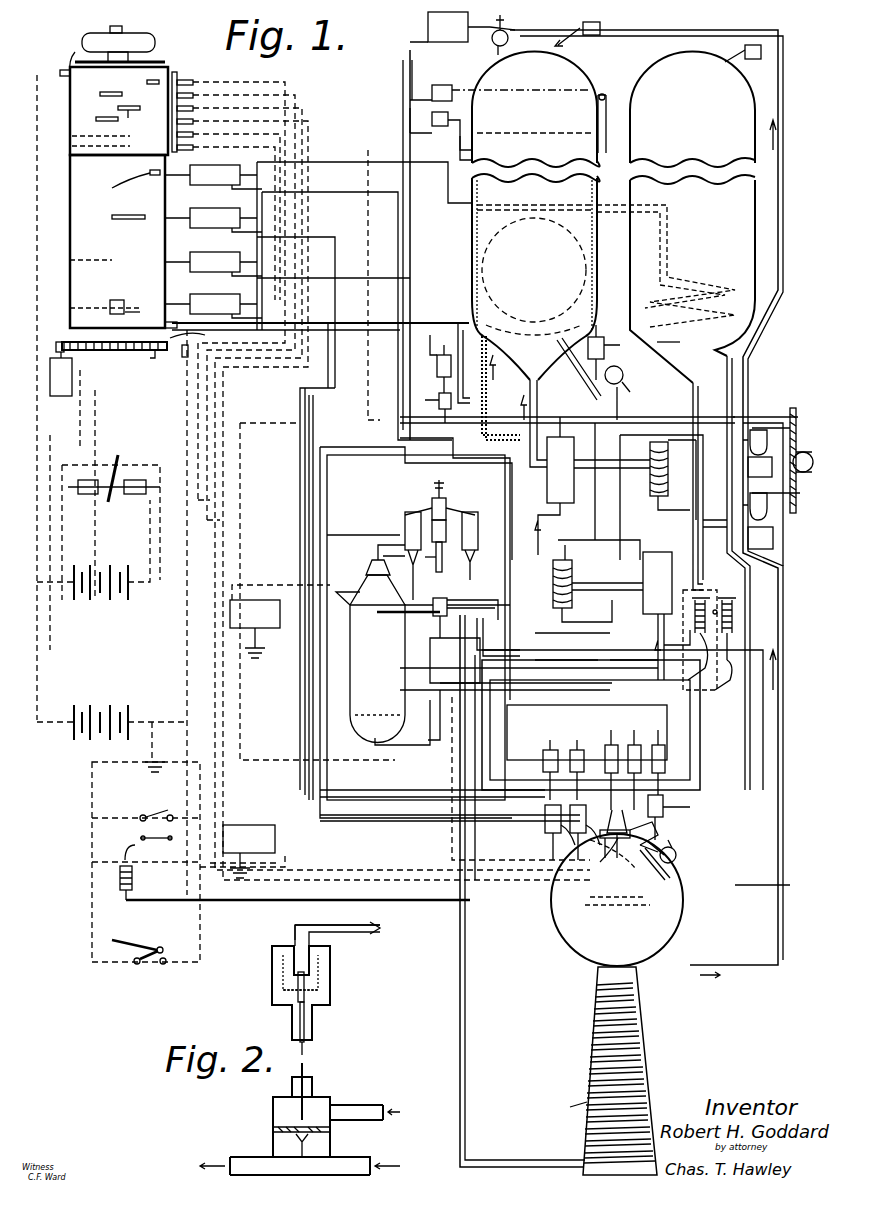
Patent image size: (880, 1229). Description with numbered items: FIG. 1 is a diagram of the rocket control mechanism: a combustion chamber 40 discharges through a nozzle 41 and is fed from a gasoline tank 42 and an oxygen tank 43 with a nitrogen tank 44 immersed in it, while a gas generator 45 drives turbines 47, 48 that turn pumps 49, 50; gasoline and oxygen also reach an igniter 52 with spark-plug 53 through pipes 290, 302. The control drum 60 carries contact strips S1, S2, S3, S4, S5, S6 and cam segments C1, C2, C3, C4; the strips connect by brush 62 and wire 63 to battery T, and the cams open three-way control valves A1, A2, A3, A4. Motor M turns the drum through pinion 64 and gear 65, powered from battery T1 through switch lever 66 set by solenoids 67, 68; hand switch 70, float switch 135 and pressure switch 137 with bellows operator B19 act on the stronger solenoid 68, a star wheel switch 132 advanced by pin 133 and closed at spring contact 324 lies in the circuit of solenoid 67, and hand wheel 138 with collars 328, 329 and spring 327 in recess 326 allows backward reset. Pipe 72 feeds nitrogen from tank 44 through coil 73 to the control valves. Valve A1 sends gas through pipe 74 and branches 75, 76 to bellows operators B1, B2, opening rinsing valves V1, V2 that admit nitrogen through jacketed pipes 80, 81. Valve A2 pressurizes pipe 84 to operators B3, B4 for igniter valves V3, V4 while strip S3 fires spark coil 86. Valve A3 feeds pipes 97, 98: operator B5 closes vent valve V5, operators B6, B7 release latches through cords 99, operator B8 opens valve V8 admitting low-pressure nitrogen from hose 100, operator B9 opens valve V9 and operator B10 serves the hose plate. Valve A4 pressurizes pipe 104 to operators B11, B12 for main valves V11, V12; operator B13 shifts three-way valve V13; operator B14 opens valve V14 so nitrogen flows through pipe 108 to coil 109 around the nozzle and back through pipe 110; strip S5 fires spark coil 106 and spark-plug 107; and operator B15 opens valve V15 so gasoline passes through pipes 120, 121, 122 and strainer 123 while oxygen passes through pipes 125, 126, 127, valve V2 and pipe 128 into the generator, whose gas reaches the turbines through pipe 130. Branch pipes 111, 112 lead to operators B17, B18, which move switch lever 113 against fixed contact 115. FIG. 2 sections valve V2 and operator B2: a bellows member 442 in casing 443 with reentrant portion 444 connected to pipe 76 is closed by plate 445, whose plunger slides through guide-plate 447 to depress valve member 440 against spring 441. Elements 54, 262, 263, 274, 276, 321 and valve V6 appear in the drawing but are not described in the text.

In FIG. 1, the combustion chamber 40 is at (672, 937).
In FIG. 1, the nozzle 41 is at (640, 1040).
In FIG. 1, the gasoline tank 42 is at (692, 421).
In FIG. 1, the oxygen tank 43 is at (521, 216).
In FIG. 1, the nitrogen tank 44 is at (534, 276).
In FIG. 1, the gas generator 45 is at (355, 648).
In FIG. 1, the turbine 47 is at (598, 591).
In FIG. 1, the turbine 48 is at (638, 507).
In FIG. 1, the gasoline pump 49 is at (650, 616).
In FIG. 1, the oxygen pump 50 is at (567, 496).
In FIG. 1, the igniter 52 is at (608, 838).
In FIG. 1, the spark-plug 53 is at (614, 850).
In FIG. 1, the spark plug igniter 54 is at (676, 855).
In FIG. 1, the drum 60 is at (70, 275).
In FIG. 1, the brush 62 is at (58, 68).
In FIG. 1, the wire 63 is at (26, 397).
In FIG. 1, the pinion 64 is at (53, 334).
In FIG. 1, the gear 65 is at (141, 361).
In FIG. 1, the switch lever 66 is at (120, 464).
In FIG. 1, the solenoid 67 is at (114, 479).
In FIG. 1, the solenoid 68 is at (146, 480).
In FIG. 1, the hand switch 70 is at (146, 805).
In FIG. 1, the pipe 72 is at (468, 290).
In FIG. 1, the coil 73 is at (666, 266).
In FIG. 1, the pipe 74 is at (357, 316).
In FIG. 1, the branch pipe 75 is at (416, 627).
In FIG. 1, the branch pipe 76 is at (403, 689).
In FIG. 1, the jacketed pipe 80 is at (489, 593).
In FIG. 1, the branch jacketed pipe 81 is at (472, 605).
In FIG. 2, the branch jacketed pipe 81 is at (365, 1103).
In FIG. 1, the pipe 84 is at (360, 828).
In FIG. 1, the spark coil 86 is at (242, 851).
In FIG. 1, the pipe 97 is at (420, 245).
In FIG. 1, the pipe 98 is at (496, 350).
In FIG. 1, the cords 99 is at (533, 123).
In FIG. 1, the hose 100 is at (661, 493).
In FIG. 1, the pipe 104 is at (290, 470).
In FIG. 1, the spark coil 106 is at (280, 621).
In FIG. 1, the spark-plug 107 is at (360, 597).
In FIG. 1, the pipe 108 is at (490, 799).
In FIG. 1, the coil 109 is at (567, 1103).
In FIG. 1, the pipe 110 is at (762, 885).
In FIG. 1, the branch pipe 111 is at (684, 646).
In FIG. 1, the branch pipe 112 is at (529, 667).
In FIG. 1, the switch lever 113 is at (728, 619).
In FIG. 1, the fixed contact 115 is at (700, 634).
In FIG. 1, the pipe 120 is at (694, 525).
In FIG. 1, the pipe 121 is at (524, 661).
In FIG. 1, the pipe 122 is at (370, 550).
In FIG. 1, the strainer 123 is at (362, 567).
In FIG. 1, the pipe 125 is at (547, 421).
In FIG. 1, the pipe 126 is at (434, 573).
In FIG. 1, the pipe 127 is at (498, 637).
In FIG. 2, the pipe 127 is at (365, 1155).
In FIG. 1, the pipe 128 is at (406, 626).
In FIG. 2, the pipe 128 is at (285, 1155).
In FIG. 1, the pipe 130 is at (507, 642).
In FIG. 1, the star wheel switch 132 is at (186, 319).
In FIG. 1, the pin 133 is at (180, 358).
In FIG. 1, the float switch 135 is at (139, 961).
In FIG. 1, the pressure-controlled switch 137 is at (146, 849).
In FIG. 1, the hand wheel 138 is at (132, 47).
In FIG. 1, the circuit 262 is at (109, 521).
In FIG. 1, the circuit 263 is at (87, 510).
In FIG. 1, the lead 274 is at (116, 849).
In FIG. 1, the lead 276 is at (298, 910).
In FIG. 1, the oxygen supply pipe 290 is at (607, 725).
In FIG. 1, the gasoline pipe 302 is at (767, 735).
In FIG. 1, the cover 321 is at (60, 53).
In FIG. 1, the fixed spring contact 324 is at (206, 335).
In FIG. 1, the recess 326 is at (143, 320).
In FIG. 1, the compression spring 327 is at (133, 300).
In FIG. 1, the collar 328 is at (114, 358).
In FIG. 1, the second collar 329 is at (122, 30).
In FIG. 2, the valve member 440 is at (312, 1100).
In FIG. 2, the spring 441 is at (310, 1150).
In FIG. 2, the bellows member 442 is at (272, 957).
In FIG. 2, the casing 443 is at (272, 985).
In FIG. 2, the reentrant portion 444 is at (330, 955).
In FIG. 2, the plate 445 is at (312, 1012).
In FIG. 2, the guide-plate 447 is at (292, 1100).
In FIG. 1, the three-way control valve A1 is at (213, 177).
In FIG. 1, the three-way control valve A2 is at (213, 220).
In FIG. 1, the three-way control valve A3 is at (213, 264).
In FIG. 1, the three-way control valve A4 is at (213, 306).
In FIG. 1, the bellows operator B1 is at (542, 775).
In FIG. 1, the bellows operator B2 is at (428, 556).
In FIG. 2, the bellows operator B2 is at (330, 982).
In FIG. 1, the bellows operator B3 is at (609, 770).
In FIG. 1, the bellows operator B4 is at (639, 770).
In FIG. 1, the bellows operator B5 is at (450, 27).
In FIG. 1, the bellows operator B6 is at (500, 80).
In FIG. 1, the bellows operator B7 is at (441, 134).
In FIG. 1, the bellows operator B8 is at (760, 467).
In FIG. 1, the bellows operator B9 is at (768, 542).
In FIG. 1, the bellows operator B10 is at (802, 460).
In FIG. 1, the bellows operator B11 is at (573, 764).
In FIG. 1, the bellows operator B12 is at (667, 762).
In FIG. 1, the bellows operator B13 is at (615, 352).
In FIG. 1, the bellows operator B14 is at (441, 364).
In FIG. 1, the bellows operator B15 is at (440, 500).
In FIG. 1, the bellows operator B17 is at (698, 663).
In FIG. 1, the bellows operator B18 is at (725, 675).
In FIG. 1, the bellows operator B19 is at (139, 883).
In FIG. 1, the cam segment C1 is at (126, 185).
In FIG. 1, the cam segment C2 is at (125, 220).
In FIG. 1, the cam segment C3 is at (91, 271).
In FIG. 1, the cam segment C4 is at (105, 316).
In FIG. 1, the motor M is at (61, 387).
In FIG. 1, the contact strip S1 is at (143, 79).
In FIG. 1, the contact strip S2 is at (110, 87).
In FIG. 1, the contact strip S3 is at (132, 115).
In FIG. 1, the contact strip S4 is at (97, 114).
In FIG. 1, the contact strip S5 is at (103, 136).
In FIG. 1, the contact strip S6 is at (112, 146).
In FIG. 1, the battery T is at (111, 727).
In FIG. 1, the battery T1 is at (93, 550).
In FIG. 1, the nitrogen rinsing valve V1 is at (557, 835).
In FIG. 1, the nitrogen rinsing valve V2 is at (457, 618).
In FIG. 2, the nitrogen rinsing valve V2 is at (273, 1108).
In FIG. 1, the oxygen valve V3 is at (609, 822).
In FIG. 1, the gasoline valve V4 is at (654, 838).
In FIG. 1, the vent valve V5 is at (512, 35).
In FIG. 1, the valve V6 is at (476, 546).
In FIG. 1, the valve V8 is at (752, 430).
In FIG. 1, the valve V9 is at (766, 512).
In FIG. 1, the main oxygen valve V11 is at (585, 823).
In FIG. 1, the main gasoline valve V12 is at (680, 812).
In FIG. 1, the three-way valve V13 is at (601, 379).
In FIG. 1, the valve V14 is at (434, 406).
In FIG. 1, the valve V15 is at (396, 555).